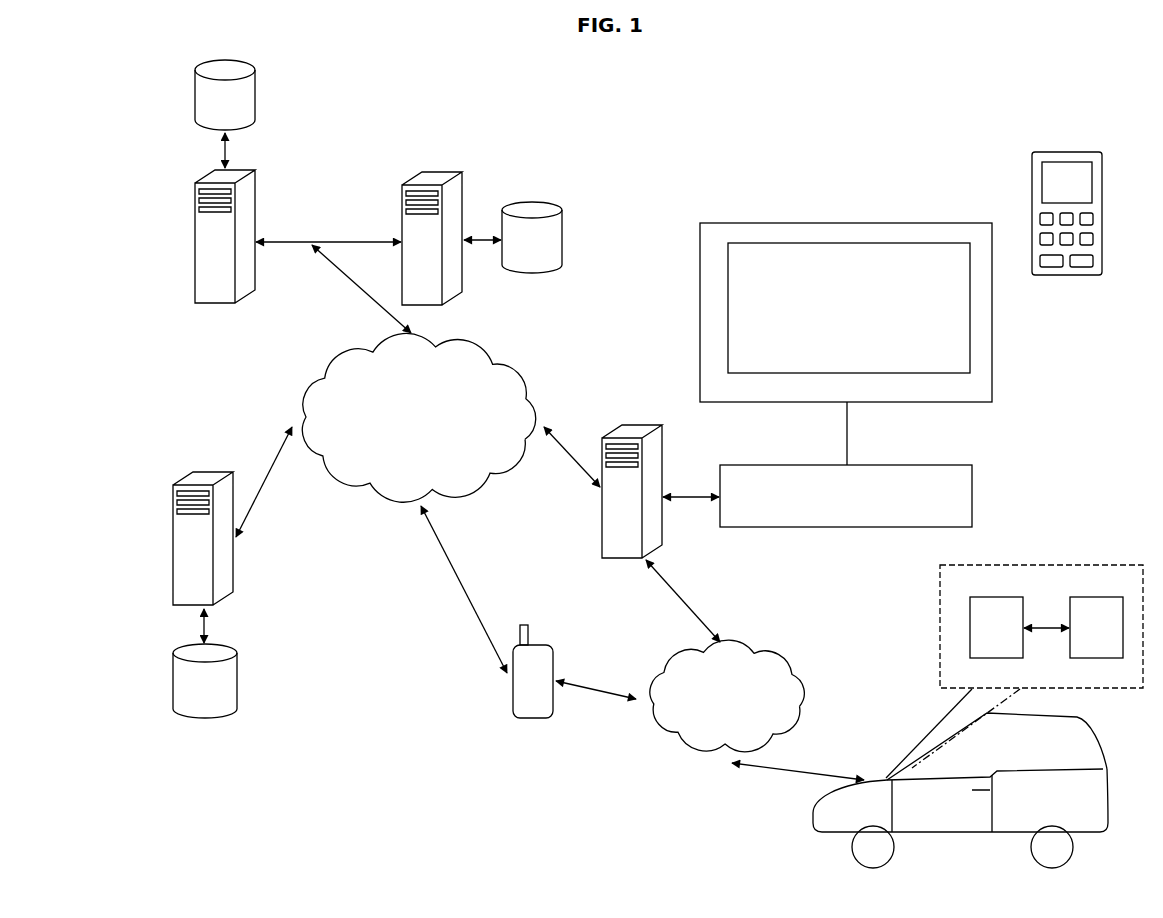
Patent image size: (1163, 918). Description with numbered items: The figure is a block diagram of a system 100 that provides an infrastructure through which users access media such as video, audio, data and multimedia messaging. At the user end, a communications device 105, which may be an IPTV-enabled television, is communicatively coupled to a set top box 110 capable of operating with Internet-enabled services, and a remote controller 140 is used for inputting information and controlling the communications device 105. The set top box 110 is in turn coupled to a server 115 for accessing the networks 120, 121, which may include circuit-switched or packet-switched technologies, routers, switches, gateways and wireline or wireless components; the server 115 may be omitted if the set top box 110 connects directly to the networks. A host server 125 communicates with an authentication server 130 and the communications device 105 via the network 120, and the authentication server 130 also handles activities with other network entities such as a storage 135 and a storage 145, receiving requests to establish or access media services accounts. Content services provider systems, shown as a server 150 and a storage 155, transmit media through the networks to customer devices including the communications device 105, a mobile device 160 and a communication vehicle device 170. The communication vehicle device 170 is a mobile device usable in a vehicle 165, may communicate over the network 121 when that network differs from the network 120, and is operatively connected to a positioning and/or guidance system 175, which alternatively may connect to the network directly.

The system 100 is at (122, 110).
The communications device 105 is at (868, 344).
The set top box 110 is at (878, 498).
The server 115 is at (661, 533).
The network 120 is at (418, 503).
The network 121 is at (757, 710).
The host server 125 is at (303, 251).
The authentication server 130 is at (451, 238).
The storage 135 is at (549, 239).
The remote controller 140 is at (1067, 226).
The storage 145 is at (226, 103).
The server 150 is at (190, 557).
The storage 155 is at (192, 681).
The mobile device 160 is at (560, 684).
The vehicle 165 is at (812, 815).
The communication vehicle device 170 is at (1041, 626).
The positioning and/or guidance system 175 is at (1096, 627).